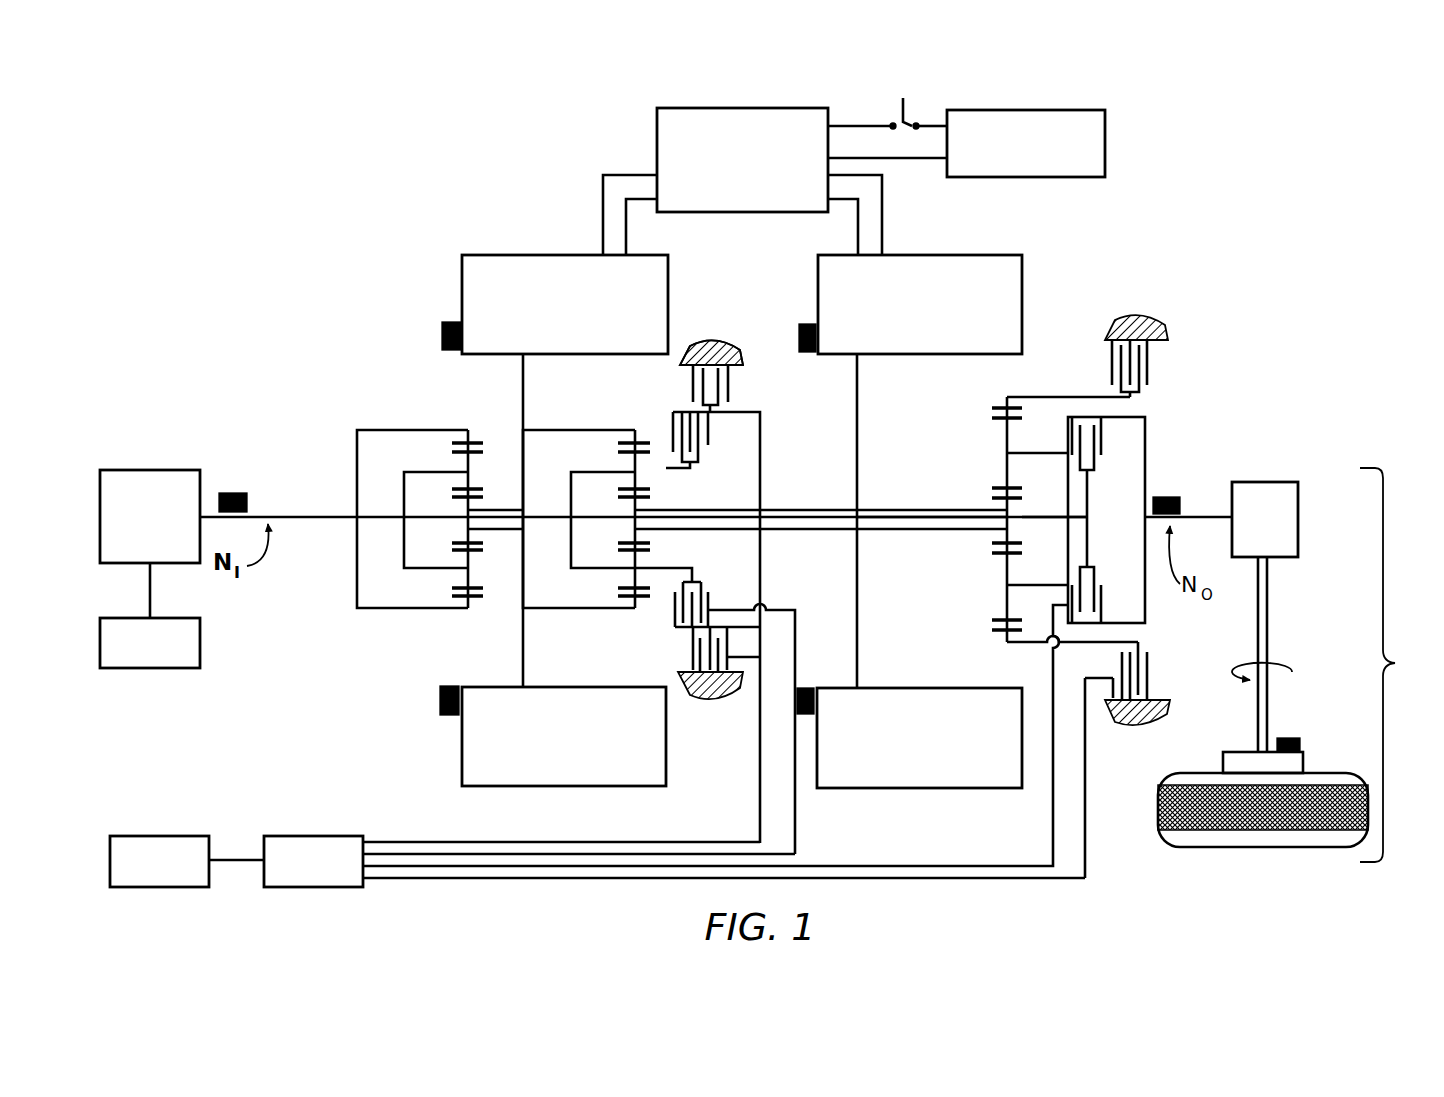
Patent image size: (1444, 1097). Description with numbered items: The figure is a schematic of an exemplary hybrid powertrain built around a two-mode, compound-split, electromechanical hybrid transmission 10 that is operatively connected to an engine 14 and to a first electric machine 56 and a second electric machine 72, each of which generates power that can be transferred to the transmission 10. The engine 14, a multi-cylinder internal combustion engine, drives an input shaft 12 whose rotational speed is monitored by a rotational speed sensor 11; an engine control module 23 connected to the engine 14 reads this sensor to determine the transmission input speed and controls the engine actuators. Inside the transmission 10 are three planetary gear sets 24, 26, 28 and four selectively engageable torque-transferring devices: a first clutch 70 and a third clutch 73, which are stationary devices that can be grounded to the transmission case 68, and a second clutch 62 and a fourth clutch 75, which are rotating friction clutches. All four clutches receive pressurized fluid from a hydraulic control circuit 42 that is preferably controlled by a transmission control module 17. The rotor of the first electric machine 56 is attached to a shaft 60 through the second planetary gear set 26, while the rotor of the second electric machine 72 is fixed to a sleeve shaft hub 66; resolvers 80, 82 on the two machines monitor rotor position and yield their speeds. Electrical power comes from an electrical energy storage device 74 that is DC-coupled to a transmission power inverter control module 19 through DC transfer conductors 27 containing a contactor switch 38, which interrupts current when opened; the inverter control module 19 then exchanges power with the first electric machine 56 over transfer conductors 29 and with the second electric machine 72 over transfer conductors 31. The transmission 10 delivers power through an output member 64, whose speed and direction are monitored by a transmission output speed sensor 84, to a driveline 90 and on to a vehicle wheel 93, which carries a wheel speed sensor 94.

The electromechanical hybrid transmission 10 is at (418, 208).
The rotational speed sensor 11 is at (233, 493).
The input shaft 12 is at (318, 517).
The engine 14 is at (157, 470).
The transmission control module 17 is at (152, 836).
The transmission power inverter control module 19 is at (657, 128).
The engine control module 23 is at (200, 656).
The first planetary gear set 24 is at (455, 426).
The second planetary gear set 26 is at (625, 426).
The DC transfer conductors 27 is at (840, 126).
The third planetary gear set 28 is at (995, 398).
The transfer conductors 29 is at (603, 212).
The transfer conductors 31 is at (882, 210).
The contactor switch 38 is at (905, 106).
The hydraulic control circuit 42 is at (282, 836).
The first electric machine 56 is at (462, 290).
The shaft 60 is at (1063, 517).
The clutch C2 62 is at (1107, 462).
The output member 64 is at (1203, 517).
The sleeve shaft hub 66 is at (895, 516).
The transmission case 68 is at (700, 342).
The clutch C1 70 is at (1098, 354).
The second electric machine 72 is at (1022, 270).
The clutch C3 73 is at (737, 390).
The electrical energy storage device 74 is at (1105, 132).
The clutch C4 75 is at (720, 448).
The resolver 80 is at (442, 337).
The resolver 82 is at (807, 324).
The transmission output speed sensor 84 is at (1170, 497).
The driveline 90 is at (1396, 663).
The vehicle wheel 93 is at (1223, 762).
The wheel speed sensor 94 is at (1290, 738).